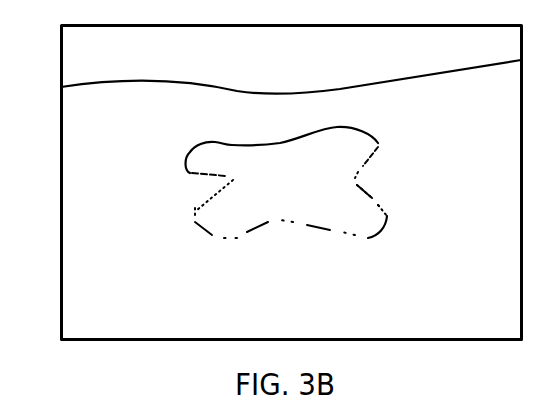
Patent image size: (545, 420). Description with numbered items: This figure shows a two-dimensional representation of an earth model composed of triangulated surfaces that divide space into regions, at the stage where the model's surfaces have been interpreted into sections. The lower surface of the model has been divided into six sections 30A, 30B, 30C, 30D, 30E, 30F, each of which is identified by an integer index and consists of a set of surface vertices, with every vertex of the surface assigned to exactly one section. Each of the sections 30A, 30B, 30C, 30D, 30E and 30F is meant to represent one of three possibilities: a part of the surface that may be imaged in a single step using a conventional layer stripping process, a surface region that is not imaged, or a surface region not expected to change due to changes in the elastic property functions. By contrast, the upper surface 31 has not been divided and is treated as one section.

The surface 31 is at (240, 88).
The section 30A is at (230, 142).
The section 30B is at (367, 172).
The section 30C is at (362, 190).
The section 30D is at (260, 225).
The section 30E is at (200, 202).
The section 30F is at (200, 173).